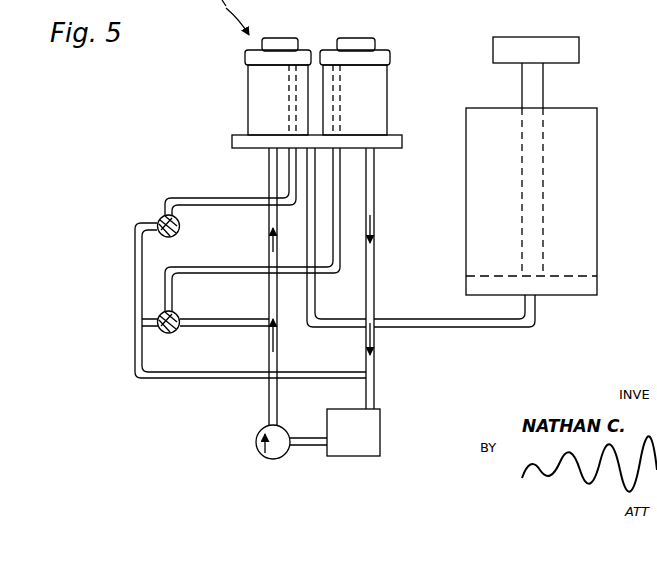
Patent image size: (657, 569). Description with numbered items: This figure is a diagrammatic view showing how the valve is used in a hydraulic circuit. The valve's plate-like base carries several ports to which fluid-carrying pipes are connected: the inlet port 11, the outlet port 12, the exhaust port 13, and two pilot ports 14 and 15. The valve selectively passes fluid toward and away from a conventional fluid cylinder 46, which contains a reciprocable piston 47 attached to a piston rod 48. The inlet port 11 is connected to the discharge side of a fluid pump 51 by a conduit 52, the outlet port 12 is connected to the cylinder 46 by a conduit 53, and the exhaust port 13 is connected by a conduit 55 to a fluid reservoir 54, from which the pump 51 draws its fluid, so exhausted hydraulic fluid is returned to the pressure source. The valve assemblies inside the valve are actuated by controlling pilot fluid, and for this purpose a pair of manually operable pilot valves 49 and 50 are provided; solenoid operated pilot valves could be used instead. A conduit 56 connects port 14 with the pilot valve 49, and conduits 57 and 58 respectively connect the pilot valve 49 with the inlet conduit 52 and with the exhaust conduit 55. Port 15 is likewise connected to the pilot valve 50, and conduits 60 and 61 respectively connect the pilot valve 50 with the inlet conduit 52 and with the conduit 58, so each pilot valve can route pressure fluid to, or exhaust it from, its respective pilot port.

The inlet port 11 is at (262, 151).
The outlet port 12 is at (321, 152).
The exhaust port 13 is at (381, 151).
The port 14 is at (289, 151).
The port 15 is at (343, 151).
The fluid cylinder 46 is at (600, 200).
The piston 47 is at (580, 287).
The piston rod 48 is at (540, 87).
The pilot valve 49 is at (157, 216).
The pilot valve 50 is at (175, 334).
The fluid pump 51 is at (268, 462).
The conduit 52 is at (268, 397).
The conduit 53 is at (460, 328).
The fluid reservoir 54 is at (358, 457).
The conduit 55 is at (376, 279).
The conduit 56 is at (284, 212).
The conduit 57 is at (233, 228).
The conduit 58 is at (134, 272).
The conduit 60 is at (241, 327).
The conduit 61 is at (148, 329).